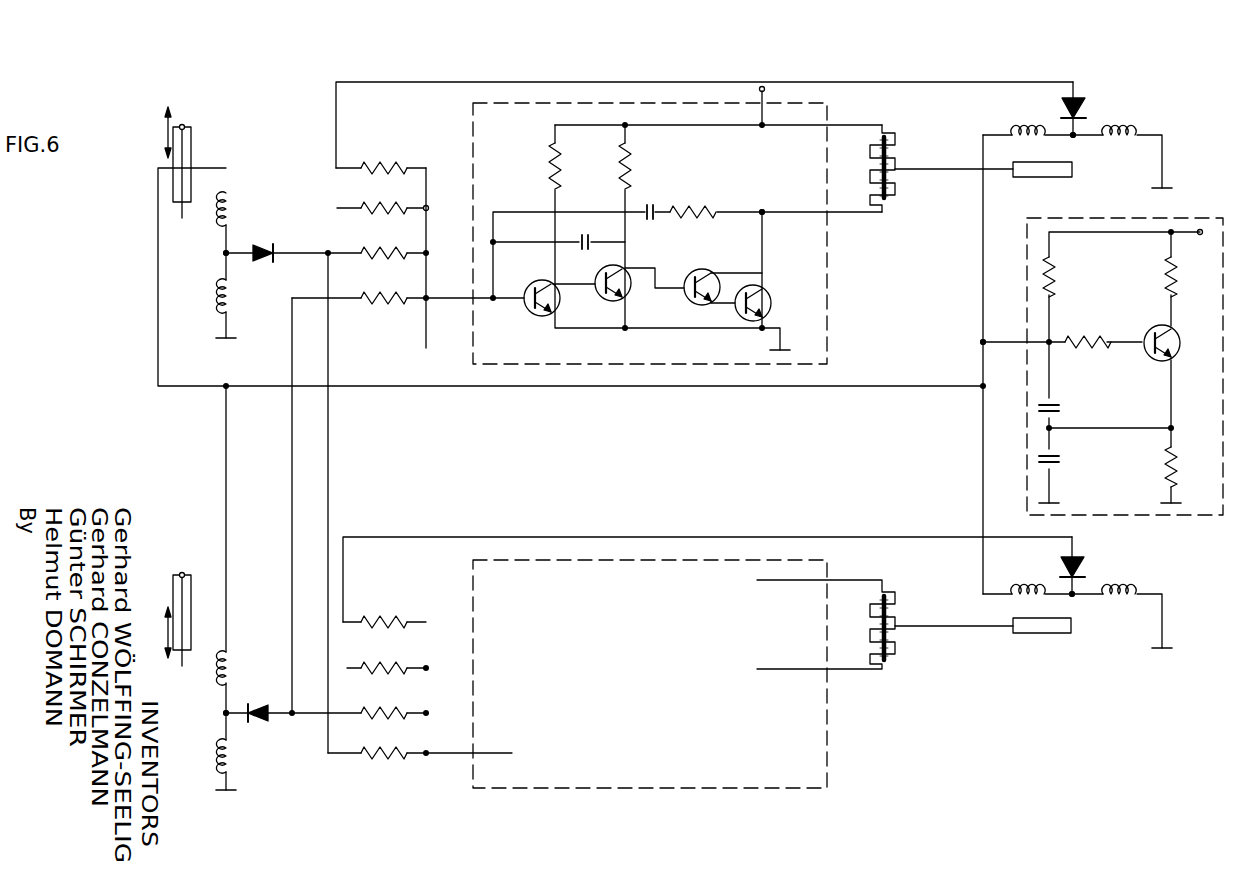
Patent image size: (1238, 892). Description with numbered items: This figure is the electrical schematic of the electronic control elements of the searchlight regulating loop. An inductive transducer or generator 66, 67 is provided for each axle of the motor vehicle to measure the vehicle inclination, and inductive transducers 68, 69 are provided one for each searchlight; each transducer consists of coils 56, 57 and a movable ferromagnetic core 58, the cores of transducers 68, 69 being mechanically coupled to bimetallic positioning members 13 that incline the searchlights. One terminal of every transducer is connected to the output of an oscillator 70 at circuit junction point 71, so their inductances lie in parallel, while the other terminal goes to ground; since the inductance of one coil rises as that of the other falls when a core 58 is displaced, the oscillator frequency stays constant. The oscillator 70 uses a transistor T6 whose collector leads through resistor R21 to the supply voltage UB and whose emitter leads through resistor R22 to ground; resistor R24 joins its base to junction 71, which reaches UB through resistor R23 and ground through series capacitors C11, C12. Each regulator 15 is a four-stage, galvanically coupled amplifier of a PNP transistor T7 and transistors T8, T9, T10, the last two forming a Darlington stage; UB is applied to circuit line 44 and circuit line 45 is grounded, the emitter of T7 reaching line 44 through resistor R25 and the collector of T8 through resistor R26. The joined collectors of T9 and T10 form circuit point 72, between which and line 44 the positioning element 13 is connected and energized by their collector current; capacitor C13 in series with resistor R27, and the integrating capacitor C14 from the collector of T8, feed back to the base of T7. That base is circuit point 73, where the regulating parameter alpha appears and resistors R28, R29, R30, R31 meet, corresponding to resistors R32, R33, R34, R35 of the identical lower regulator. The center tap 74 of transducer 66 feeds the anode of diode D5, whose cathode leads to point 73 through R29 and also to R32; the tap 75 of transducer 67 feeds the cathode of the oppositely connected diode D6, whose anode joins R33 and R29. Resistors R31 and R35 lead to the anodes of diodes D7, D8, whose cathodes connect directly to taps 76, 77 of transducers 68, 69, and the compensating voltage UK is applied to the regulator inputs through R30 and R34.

The bimetallic positioning member 13 is at (860, 157).
The regulator 15 is at (572, 99).
The circuit line 44 is at (720, 125).
The circuit line 45 is at (676, 328).
The coil 56 is at (226, 208).
The coil 57 is at (228, 304).
The movable ferromagnetic core 58 is at (175, 226).
The inductive transducer 66 is at (269, 204).
The inductive transducer 67 is at (246, 656).
The inductive transducer 68 is at (1142, 126).
The inductive transducer 69 is at (1114, 610).
The oscillator 70 is at (1101, 384).
The circuit junction point 71 is at (1041, 340).
The circuit point 72 is at (762, 212).
The circuit point 73 is at (425, 300).
The coil tap 74 is at (228, 260).
The tap 75 is at (233, 712).
The tap 76 is at (1074, 138).
The tap 77 is at (1072, 594).
The diode D5 is at (265, 240).
The diode D6 is at (256, 702).
The diode D7 is at (1076, 101).
The diode D8 is at (1080, 560).
The resistor R21 is at (1162, 278).
The resistor R22 is at (1166, 476).
The resistor R23 is at (1058, 279).
The resistor R24 is at (1080, 340).
The resistor R25 is at (521, 157).
The resistor R26 is at (636, 160).
The resistor R27 is at (692, 220).
The resistor R28 is at (374, 302).
The resistor R29 is at (367, 260).
The resistor R30 is at (363, 217).
The resistor R31 is at (383, 160).
The resistor R32 is at (365, 762).
The resistor R33 is at (383, 700).
The resistor R34 is at (396, 660).
The resistor R35 is at (385, 616).
The capacitor C11 is at (1056, 408).
The capacitor C12 is at (1062, 462).
The capacitor C13 is at (656, 206).
The integrating capacitor C14 is at (584, 219).
The transistor T6 is at (1174, 330).
The transistor T7 is at (536, 278).
The transistor T8 is at (610, 308).
The transistor T9 is at (698, 270).
The transistor T10 is at (764, 304).
The supply voltage UB is at (763, 88).
The compensating voltage UK is at (337, 424).
The regulating parameter Δα alpha is at (410, 335).